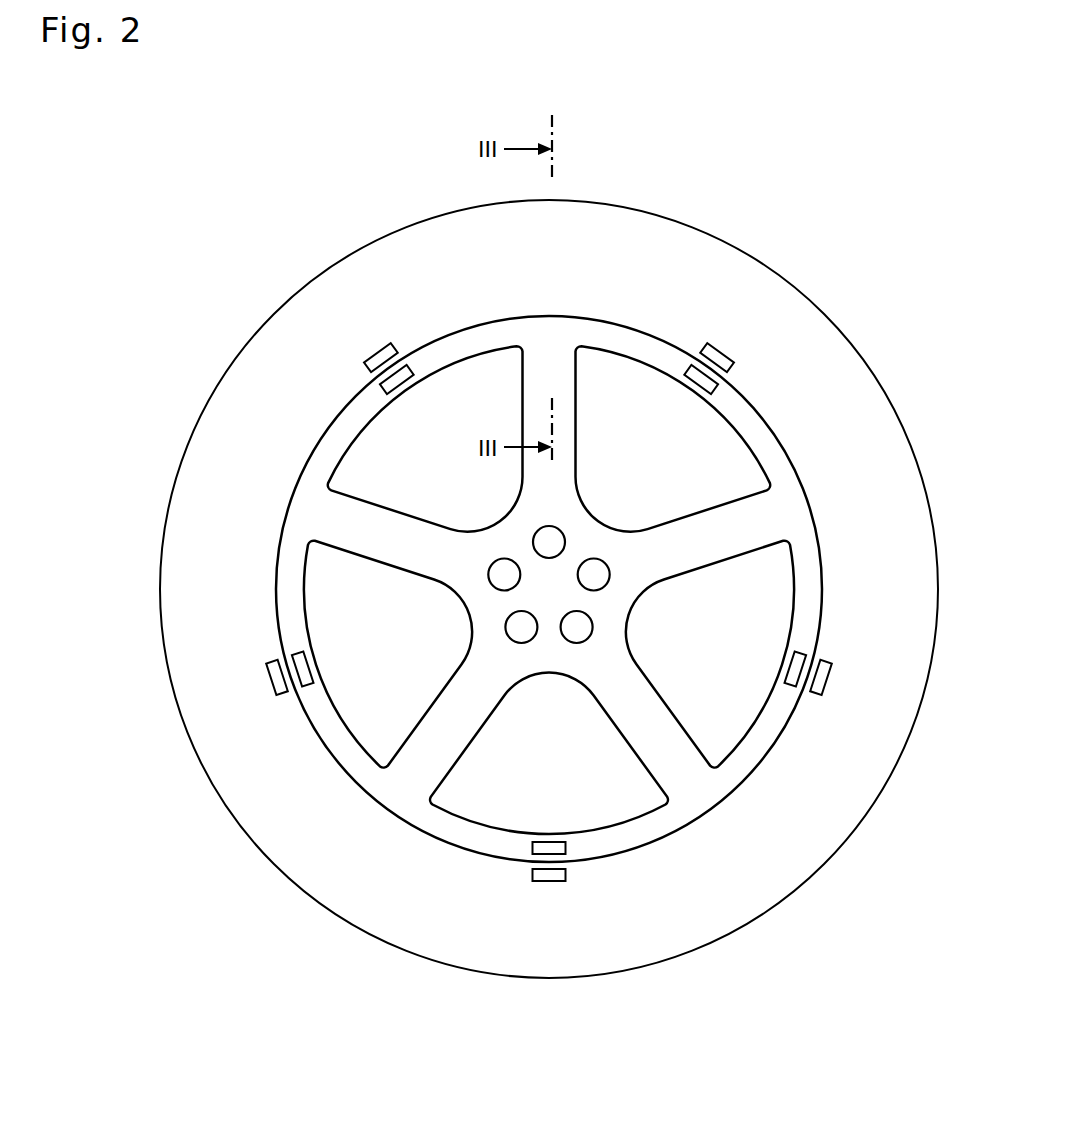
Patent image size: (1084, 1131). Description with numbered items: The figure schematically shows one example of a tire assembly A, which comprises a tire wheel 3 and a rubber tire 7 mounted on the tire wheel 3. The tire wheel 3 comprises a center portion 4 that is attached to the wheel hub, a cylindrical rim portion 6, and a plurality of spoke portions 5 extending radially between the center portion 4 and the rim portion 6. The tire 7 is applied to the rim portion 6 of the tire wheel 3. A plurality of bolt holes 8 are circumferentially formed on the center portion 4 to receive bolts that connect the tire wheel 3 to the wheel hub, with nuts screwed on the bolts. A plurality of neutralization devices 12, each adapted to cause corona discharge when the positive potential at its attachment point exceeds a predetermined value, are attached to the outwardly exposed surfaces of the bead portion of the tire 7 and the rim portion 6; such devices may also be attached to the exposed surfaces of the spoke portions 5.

The tire wheel 3 is at (549, 699).
The center portion 4 is at (545, 655).
The spoke portions 5 is at (535, 396).
The rim portion 6 is at (598, 845).
The tire 7 is at (312, 880).
The bolt holes 8 is at (552, 537).
The neutralization device 12 is at (368, 360).
The tire assembly A is at (790, 230).